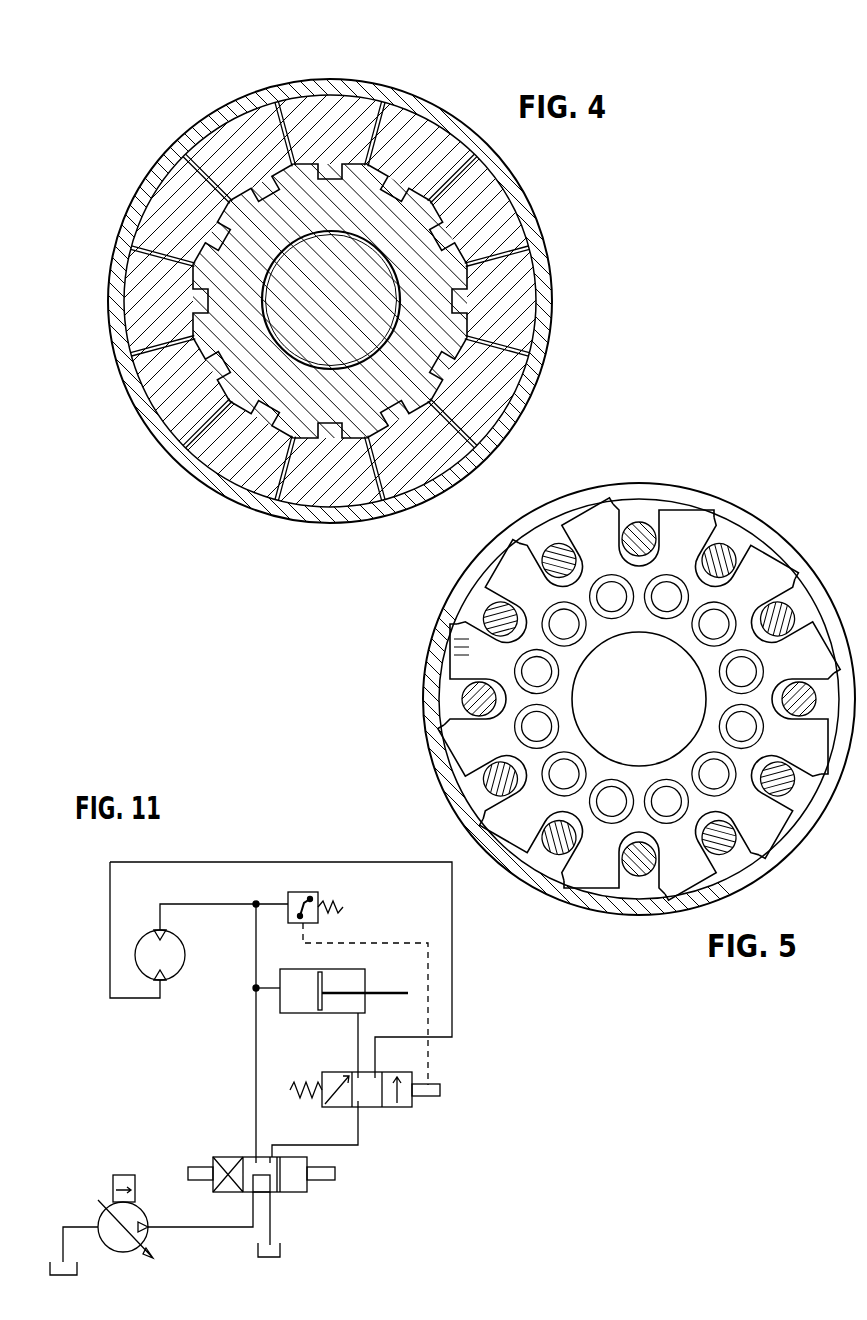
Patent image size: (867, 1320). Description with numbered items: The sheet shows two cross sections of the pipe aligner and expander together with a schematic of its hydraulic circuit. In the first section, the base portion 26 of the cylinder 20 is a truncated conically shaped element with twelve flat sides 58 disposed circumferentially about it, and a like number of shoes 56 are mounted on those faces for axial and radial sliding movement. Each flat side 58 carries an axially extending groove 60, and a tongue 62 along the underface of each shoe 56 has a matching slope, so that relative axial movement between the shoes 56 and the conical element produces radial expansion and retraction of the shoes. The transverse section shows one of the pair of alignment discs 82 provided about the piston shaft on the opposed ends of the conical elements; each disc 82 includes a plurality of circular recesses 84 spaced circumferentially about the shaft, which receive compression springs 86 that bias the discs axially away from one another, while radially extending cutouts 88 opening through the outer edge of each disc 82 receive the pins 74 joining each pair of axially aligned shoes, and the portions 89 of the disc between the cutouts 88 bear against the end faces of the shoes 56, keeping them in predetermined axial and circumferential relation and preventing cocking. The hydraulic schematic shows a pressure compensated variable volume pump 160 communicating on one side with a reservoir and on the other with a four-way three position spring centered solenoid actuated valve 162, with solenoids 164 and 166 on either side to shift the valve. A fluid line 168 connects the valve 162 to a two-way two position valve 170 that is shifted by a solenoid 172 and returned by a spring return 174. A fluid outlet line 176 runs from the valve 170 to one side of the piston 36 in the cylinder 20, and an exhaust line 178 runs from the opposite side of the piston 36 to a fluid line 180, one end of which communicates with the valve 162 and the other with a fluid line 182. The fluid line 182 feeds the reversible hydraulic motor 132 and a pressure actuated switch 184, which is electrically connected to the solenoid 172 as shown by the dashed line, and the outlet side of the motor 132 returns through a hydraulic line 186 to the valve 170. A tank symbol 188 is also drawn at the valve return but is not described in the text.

In FIG. 4, the shoes 56 is at (315, 108).
In FIG. 4, the flat sides 58 is at (290, 188).
In FIG. 4, the groove 60 is at (217, 238).
In FIG. 4, the tongue 62 is at (205, 300).
In FIG. 4, the base portion 26 is at (455, 305).
In FIG. 5, the alignment discs 82 is at (686, 540).
In FIG. 5, the portions of the discs between the cutouts 89 is at (580, 527).
In FIG. 5, the pins 74 is at (545, 562).
In FIG. 5, the circular recesses 84 is at (616, 592).
In FIG. 5, the compression springs 86 is at (585, 622).
In FIG. 5, the cutouts 88 is at (478, 590).
In FIG. 11, the hydraulic line 186 is at (232, 862).
In FIG. 11, the fluid line 182 is at (196, 904).
In FIG. 11, the pressure actuated switch 184 is at (310, 892).
In FIG. 11, the reversible hydraulic motor 132 is at (185, 950).
In FIG. 11, the exhaust line 178 is at (268, 988).
In FIG. 11, the piston 36 is at (316, 1000).
In FIG. 11, the cylinder 20 is at (330, 1013).
In FIG. 11, the fluid outlet line 176 is at (358, 1030).
In FIG. 11, the fluid line 180 is at (255, 1046).
In FIG. 11, the spring return 174 is at (292, 1085).
In FIG. 11, the solenoid 172 is at (440, 1090).
In FIG. 11, the fluid line 168 is at (358, 1132).
In FIG. 11, the two-way two position valve 170 is at (410, 1107).
In FIG. 11, the solenoid 164 is at (200, 1167).
In FIG. 11, the four-way three position spring centered solenoid actuated valve 162 is at (235, 1157).
In FIG. 11, the solenoid 166 is at (335, 1174).
In FIG. 11, the pressure compensated variable volume pump 160 is at (100, 1210).
In FIG. 11, the tank 188 is at (282, 1250).